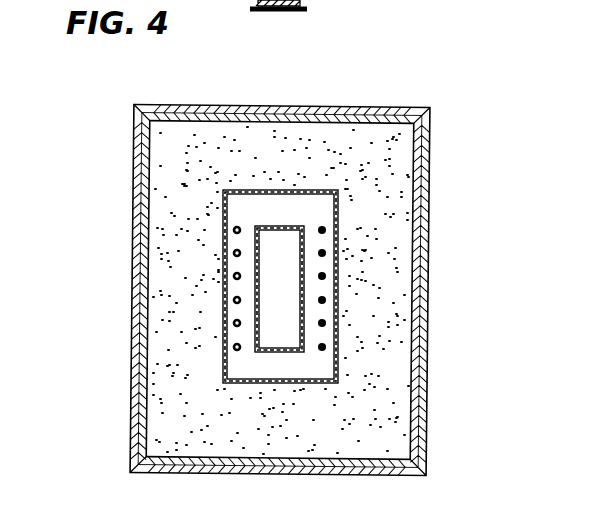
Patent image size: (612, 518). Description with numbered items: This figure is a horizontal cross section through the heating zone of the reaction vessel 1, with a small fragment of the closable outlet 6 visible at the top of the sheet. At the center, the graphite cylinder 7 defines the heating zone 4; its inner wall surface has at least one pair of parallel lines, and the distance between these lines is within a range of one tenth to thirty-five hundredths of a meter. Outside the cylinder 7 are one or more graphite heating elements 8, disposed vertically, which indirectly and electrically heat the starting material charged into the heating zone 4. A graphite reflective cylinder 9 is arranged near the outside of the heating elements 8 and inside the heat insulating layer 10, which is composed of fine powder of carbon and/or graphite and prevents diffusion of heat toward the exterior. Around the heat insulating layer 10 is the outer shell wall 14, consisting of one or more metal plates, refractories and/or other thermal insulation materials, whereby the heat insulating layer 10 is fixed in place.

The reaction vessel 1 is at (282, 287).
The heating zone 4 is at (288, 299).
The closable outlet 6 is at (307, 9).
The graphite cylinder 7 is at (250, 313).
The graphite heating elements 8 is at (326, 232).
The graphite reflective cylinder 9 is at (326, 325).
The heat insulating layer 10 is at (160, 256).
The outer shell wall 14 is at (417, 380).